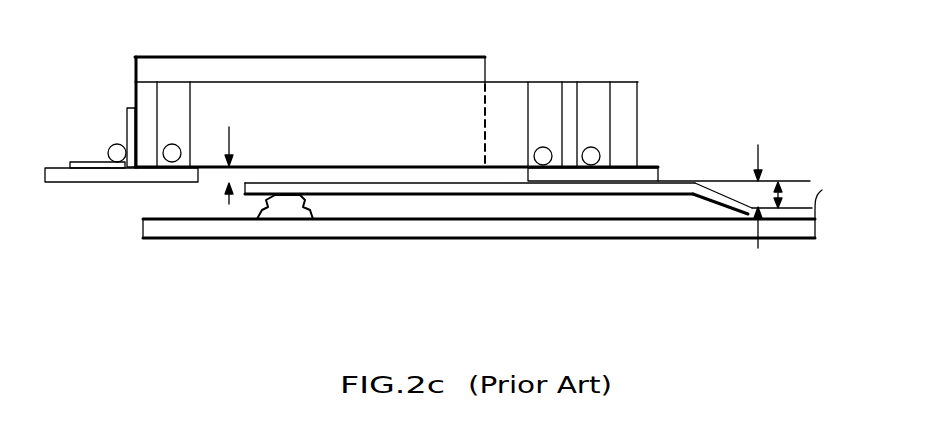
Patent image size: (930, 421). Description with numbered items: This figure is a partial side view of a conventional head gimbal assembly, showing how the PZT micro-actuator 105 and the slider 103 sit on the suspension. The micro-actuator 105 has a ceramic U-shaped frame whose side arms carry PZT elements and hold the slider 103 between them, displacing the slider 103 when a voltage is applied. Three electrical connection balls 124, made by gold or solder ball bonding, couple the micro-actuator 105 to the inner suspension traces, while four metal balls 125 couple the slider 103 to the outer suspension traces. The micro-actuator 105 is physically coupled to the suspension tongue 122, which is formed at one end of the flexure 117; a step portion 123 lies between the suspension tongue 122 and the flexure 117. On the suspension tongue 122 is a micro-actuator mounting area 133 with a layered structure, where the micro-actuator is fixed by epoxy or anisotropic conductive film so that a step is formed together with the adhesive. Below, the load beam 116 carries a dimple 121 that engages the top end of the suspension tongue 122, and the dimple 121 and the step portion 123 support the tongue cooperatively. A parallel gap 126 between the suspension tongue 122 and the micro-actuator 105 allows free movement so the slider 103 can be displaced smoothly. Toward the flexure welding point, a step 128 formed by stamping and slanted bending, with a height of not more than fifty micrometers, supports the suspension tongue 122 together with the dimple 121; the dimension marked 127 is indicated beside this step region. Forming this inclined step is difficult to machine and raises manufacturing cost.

The slider 103 is at (263, 65).
The PZT micro-actuator 105 is at (420, 110).
The load beam 116 is at (438, 222).
The flexure 117 is at (788, 210).
The dimple 121 is at (280, 206).
The suspension tongue 122 is at (507, 186).
The step portion 123 is at (718, 200).
The electrical connection balls 124 is at (172, 150).
The metal balls 125 is at (108, 153).
The parallel gap 126 is at (228, 172).
The step height 127 is at (757, 192).
The step 128 is at (790, 182).
The micro-actuator mounting area 133 is at (590, 183).